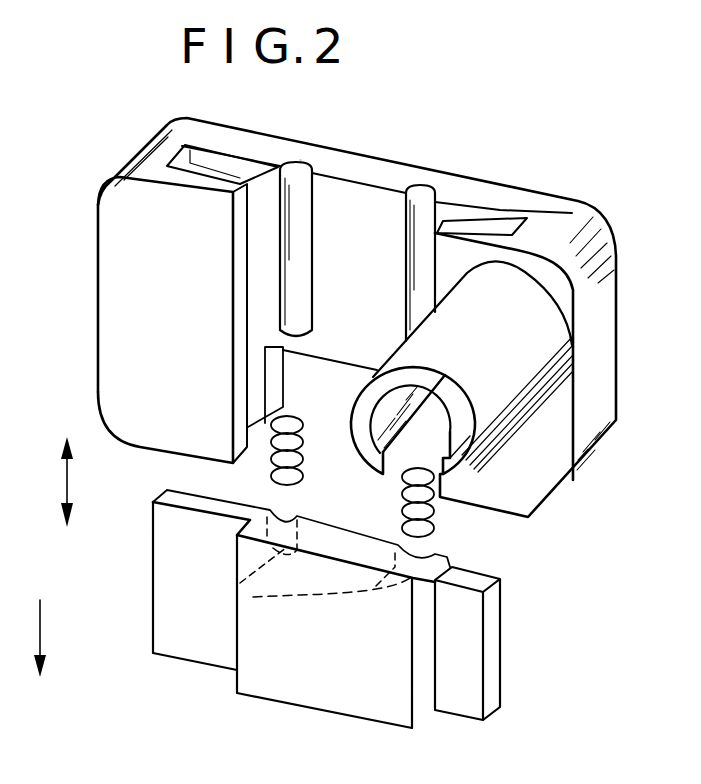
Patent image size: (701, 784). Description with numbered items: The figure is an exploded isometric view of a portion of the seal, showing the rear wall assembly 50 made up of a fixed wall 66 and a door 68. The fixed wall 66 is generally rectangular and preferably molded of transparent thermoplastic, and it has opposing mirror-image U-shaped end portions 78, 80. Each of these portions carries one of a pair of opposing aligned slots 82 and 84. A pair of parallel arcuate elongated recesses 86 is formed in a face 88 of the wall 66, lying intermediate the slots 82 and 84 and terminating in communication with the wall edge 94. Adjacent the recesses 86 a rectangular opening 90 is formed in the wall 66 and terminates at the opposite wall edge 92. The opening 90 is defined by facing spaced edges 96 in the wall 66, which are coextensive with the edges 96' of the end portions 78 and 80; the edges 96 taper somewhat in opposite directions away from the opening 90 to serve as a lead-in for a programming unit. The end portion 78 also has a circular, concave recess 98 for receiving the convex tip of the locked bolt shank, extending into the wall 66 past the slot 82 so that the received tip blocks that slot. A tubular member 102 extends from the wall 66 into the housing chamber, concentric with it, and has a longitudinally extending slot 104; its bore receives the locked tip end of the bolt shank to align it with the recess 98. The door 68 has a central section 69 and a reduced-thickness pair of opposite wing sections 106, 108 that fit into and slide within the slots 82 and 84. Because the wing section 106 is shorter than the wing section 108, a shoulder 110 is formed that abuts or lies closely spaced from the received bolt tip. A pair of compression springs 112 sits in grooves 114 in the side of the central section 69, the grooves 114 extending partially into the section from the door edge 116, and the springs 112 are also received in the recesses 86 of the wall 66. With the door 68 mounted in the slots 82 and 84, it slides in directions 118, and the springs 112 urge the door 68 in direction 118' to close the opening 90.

The rear wall assembly 50 is at (72, 328).
The fixed wall 66 is at (573, 208).
The door 68 is at (320, 728).
The central section 69 is at (290, 672).
The U-shaped end portion 78 is at (600, 276).
The U-shaped end portion 80 is at (123, 224).
The slot 82 is at (487, 218).
The slot 84 is at (225, 162).
The arcuate elongated recesses 86 is at (417, 197).
The face 88 is at (365, 253).
The rectangular opening 90 is at (323, 361).
The wall edge 92 is at (507, 517).
The wall edge 94 is at (450, 187).
The facing spaced edges 96 is at (336, 404).
The edges of the end portions 96' is at (367, 265).
The concave recess 98 is at (526, 368).
The tubular member 102 is at (507, 433).
The longitudinally extending slot 104 is at (396, 474).
The wing section 106 is at (470, 695).
The wing section 108 is at (153, 635).
The shoulder 110 is at (491, 588).
The compression springs 112 is at (270, 466).
The grooves 114 is at (240, 589).
The door edge 116 is at (208, 502).
The sliding directions 118 is at (44, 482).
The closing direction 118' is at (47, 661).